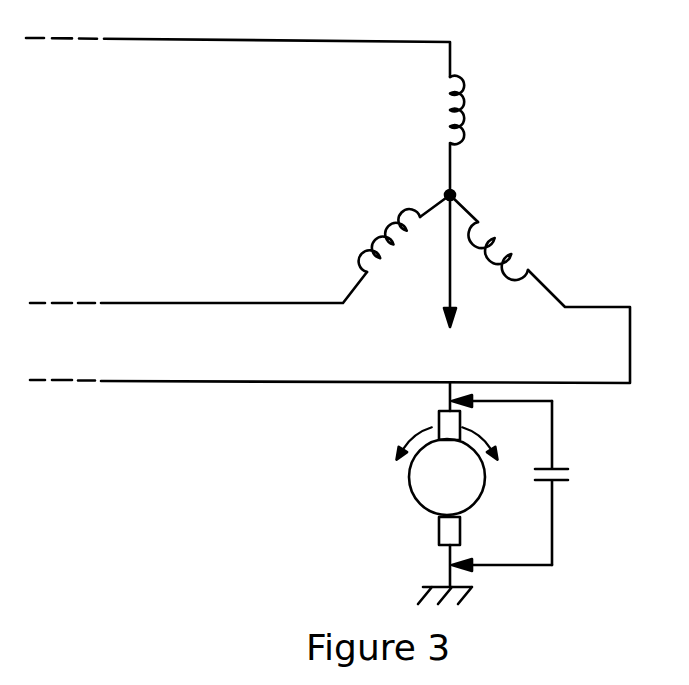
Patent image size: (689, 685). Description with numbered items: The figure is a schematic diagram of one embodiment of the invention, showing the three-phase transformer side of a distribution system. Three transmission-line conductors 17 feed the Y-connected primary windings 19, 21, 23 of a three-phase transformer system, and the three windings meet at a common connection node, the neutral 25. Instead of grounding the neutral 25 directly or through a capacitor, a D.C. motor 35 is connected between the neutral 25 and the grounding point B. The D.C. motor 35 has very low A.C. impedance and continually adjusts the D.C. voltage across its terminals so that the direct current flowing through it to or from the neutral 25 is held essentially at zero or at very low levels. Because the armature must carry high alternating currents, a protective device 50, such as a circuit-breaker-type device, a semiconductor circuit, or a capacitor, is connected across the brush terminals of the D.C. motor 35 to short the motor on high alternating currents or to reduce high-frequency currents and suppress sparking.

The transmission-line conductors 17 is at (167, 261).
The primary winding 19 is at (458, 84).
The primary winding 21 is at (506, 276).
The primary winding 23 is at (366, 252).
The neutral 25 is at (448, 193).
The D.C. motor 35 is at (415, 497).
The protective device 50 is at (562, 459).